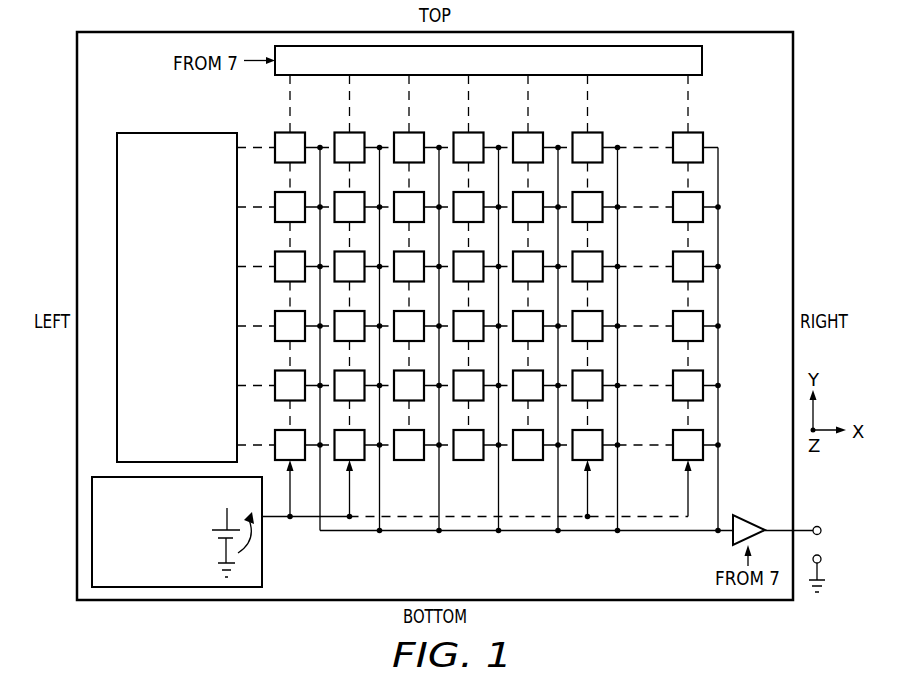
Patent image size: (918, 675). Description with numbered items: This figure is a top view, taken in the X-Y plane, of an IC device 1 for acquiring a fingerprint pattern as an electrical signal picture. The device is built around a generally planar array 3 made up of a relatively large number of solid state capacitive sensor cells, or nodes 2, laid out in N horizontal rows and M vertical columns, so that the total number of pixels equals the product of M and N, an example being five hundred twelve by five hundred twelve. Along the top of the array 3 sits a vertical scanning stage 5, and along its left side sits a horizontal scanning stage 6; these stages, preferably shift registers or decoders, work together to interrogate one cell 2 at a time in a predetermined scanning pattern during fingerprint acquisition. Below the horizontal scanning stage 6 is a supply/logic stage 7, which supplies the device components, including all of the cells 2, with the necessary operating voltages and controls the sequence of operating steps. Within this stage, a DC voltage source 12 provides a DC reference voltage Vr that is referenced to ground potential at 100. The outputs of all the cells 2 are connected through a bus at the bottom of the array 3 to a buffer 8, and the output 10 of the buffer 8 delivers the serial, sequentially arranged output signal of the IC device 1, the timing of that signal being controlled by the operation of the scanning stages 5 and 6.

The IC device 1 is at (793, 146).
The nodes 2 is at (402, 131).
The array 3 is at (750, 144).
The vertical scanning stage 5 is at (703, 60).
The horizontal scanning stage 6 is at (185, 336).
The supply/logic stage 7 is at (112, 477).
The buffer 8 is at (752, 518).
The output 10 is at (819, 523).
The DC voltage source 12 is at (215, 528).
The ground potential 100 is at (222, 545).